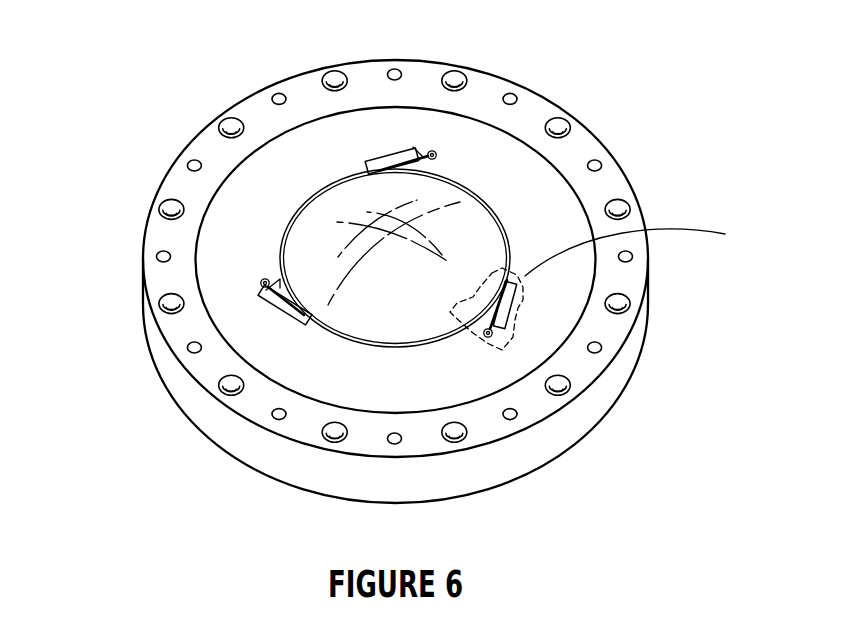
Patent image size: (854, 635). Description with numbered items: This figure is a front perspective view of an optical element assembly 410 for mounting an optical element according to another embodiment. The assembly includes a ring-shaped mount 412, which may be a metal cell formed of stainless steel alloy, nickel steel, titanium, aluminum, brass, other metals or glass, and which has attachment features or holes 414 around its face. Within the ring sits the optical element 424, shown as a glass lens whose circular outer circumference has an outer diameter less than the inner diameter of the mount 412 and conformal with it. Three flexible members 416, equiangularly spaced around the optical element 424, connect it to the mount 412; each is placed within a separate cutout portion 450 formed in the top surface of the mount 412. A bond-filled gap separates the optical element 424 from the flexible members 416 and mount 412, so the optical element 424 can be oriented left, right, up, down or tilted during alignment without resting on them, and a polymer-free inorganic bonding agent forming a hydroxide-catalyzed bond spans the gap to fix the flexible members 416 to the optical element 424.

The optical element assembly 410 is at (396, 252).
The mount 412 is at (223, 208).
The holes 414 is at (560, 125).
The flexible members 416 is at (392, 146).
The optical element 424 is at (470, 228).
The cutout portions 450 is at (410, 157).